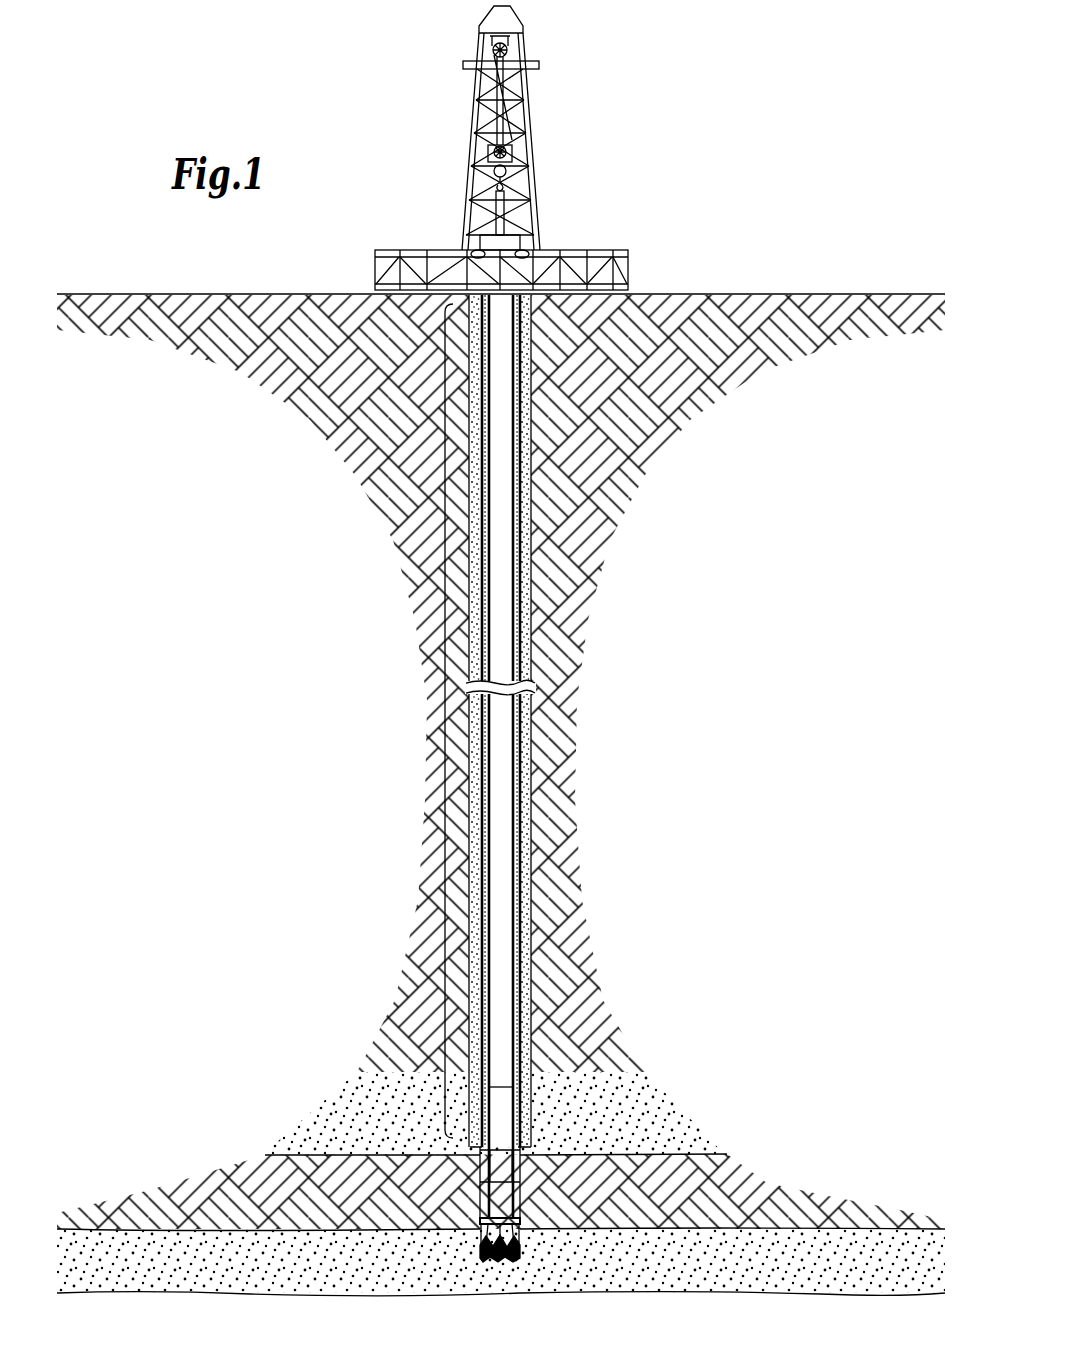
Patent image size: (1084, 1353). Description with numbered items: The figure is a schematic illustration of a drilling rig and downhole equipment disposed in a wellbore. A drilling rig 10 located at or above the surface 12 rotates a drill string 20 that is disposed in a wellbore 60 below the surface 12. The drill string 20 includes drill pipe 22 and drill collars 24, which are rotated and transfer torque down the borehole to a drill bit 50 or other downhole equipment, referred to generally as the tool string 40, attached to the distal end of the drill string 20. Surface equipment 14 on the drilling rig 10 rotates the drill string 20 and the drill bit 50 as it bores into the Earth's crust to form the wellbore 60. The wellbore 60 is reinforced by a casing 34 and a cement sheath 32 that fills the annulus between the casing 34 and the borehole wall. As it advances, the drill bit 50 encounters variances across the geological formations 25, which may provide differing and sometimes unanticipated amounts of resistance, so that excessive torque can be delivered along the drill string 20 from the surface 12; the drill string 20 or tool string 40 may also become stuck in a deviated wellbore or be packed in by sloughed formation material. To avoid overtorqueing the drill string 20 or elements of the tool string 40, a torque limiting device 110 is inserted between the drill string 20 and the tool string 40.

The drilling rig 10 is at (501, 148).
The surface 12 is at (683, 292).
The surface equipment 14 is at (528, 226).
The drill string 20 is at (445, 718).
The drill pipe 22 is at (520, 572).
The drill collars 24 is at (508, 1108).
The geological formations 25 is at (578, 622).
The cement sheath 32 is at (530, 781).
The casing 34 is at (520, 839).
The tool string 40 is at (491, 1207).
The drill bit 50 is at (480, 1238).
The wellbore 60 is at (530, 486).
The torque limiting device 110 is at (510, 1160).